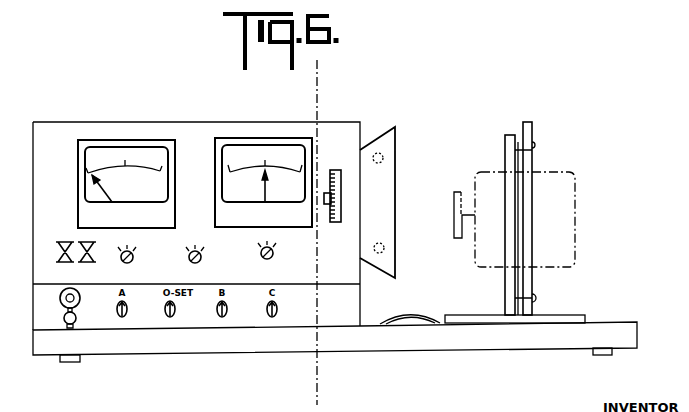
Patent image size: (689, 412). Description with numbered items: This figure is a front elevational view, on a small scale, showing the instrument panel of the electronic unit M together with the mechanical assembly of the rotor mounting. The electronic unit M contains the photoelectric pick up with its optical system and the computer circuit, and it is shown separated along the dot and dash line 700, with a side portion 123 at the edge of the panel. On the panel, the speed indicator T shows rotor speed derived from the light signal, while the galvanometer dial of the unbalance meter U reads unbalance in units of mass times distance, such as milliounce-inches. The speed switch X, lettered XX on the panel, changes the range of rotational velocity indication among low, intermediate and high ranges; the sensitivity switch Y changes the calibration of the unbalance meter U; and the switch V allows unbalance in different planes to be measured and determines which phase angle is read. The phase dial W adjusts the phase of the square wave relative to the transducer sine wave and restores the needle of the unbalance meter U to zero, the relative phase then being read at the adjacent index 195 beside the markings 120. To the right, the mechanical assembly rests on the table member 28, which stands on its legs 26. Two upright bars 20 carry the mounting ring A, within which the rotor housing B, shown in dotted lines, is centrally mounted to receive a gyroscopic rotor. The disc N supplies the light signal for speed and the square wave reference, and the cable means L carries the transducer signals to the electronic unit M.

The dot and dash line 700 is at (317, 70).
The electronic unit M is at (317, 122).
The speed indicator T is at (133, 140).
The unbalance meter U is at (273, 138).
The phase dial W is at (338, 168).
The phase scale 120 is at (335, 182).
The phase knob 195 is at (331, 200).
The speed switch X is at (120, 256).
The switch V is at (196, 250).
The sensitivity switch Y is at (275, 253).
The mounting plate 123 is at (368, 135).
The upright bars 20 is at (505, 144).
The mounting ring A is at (533, 126).
The rotor housing B is at (576, 172).
The disc N is at (455, 190).
The cable means L is at (421, 312).
The legs 26 is at (70, 364).
The table member 28 is at (366, 343).